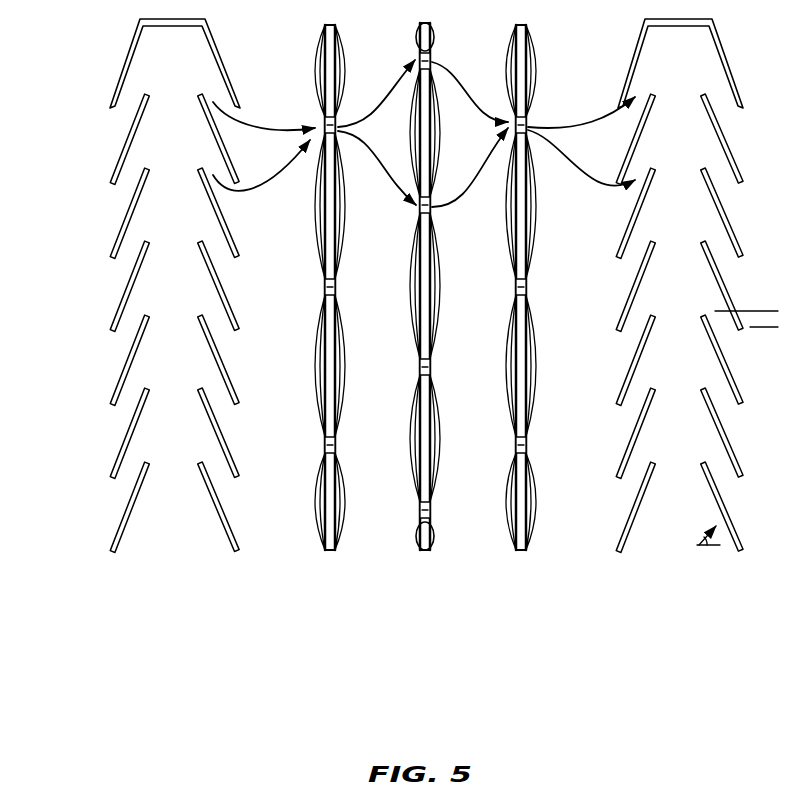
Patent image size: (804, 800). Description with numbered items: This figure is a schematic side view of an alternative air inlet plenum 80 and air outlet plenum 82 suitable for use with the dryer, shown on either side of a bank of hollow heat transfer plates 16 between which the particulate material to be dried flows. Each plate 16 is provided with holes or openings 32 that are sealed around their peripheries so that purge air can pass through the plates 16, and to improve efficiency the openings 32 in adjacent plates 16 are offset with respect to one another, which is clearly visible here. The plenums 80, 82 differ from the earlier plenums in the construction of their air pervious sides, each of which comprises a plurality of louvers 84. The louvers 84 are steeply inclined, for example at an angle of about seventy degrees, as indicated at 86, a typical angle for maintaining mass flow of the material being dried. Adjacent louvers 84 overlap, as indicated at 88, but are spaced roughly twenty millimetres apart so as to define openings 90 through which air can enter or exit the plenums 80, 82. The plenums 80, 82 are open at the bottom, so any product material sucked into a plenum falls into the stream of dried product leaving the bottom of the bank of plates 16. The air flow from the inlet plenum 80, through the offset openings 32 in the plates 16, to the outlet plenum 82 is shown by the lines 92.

The hollow heat transfer plate 16 is at (340, 533).
The opening 32 is at (338, 290).
The air inlet plenum 80 is at (102, 53).
The air outlet plenum 82 is at (745, 78).
The louver 84 is at (122, 147).
The louver inclination angle 86 is at (713, 547).
The louver overlap 88 is at (773, 318).
The opening between louvers 90 is at (128, 258).
The air flow line 92 is at (261, 130).